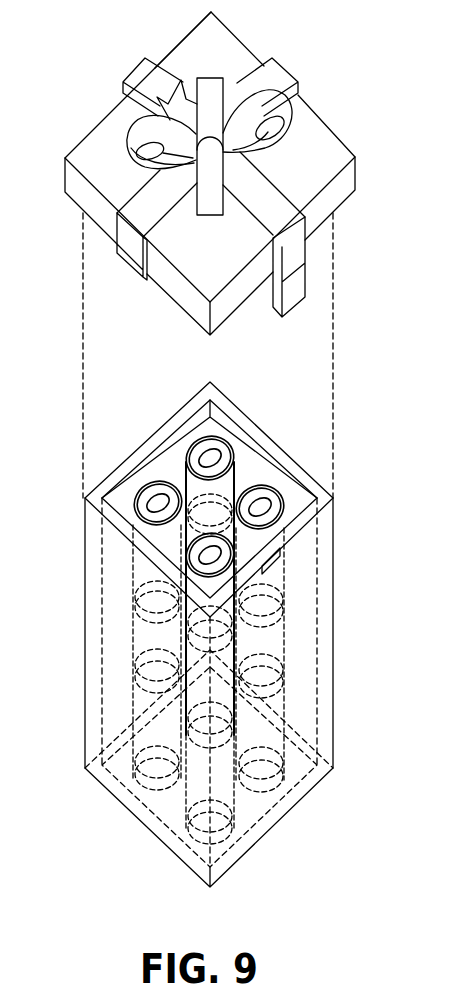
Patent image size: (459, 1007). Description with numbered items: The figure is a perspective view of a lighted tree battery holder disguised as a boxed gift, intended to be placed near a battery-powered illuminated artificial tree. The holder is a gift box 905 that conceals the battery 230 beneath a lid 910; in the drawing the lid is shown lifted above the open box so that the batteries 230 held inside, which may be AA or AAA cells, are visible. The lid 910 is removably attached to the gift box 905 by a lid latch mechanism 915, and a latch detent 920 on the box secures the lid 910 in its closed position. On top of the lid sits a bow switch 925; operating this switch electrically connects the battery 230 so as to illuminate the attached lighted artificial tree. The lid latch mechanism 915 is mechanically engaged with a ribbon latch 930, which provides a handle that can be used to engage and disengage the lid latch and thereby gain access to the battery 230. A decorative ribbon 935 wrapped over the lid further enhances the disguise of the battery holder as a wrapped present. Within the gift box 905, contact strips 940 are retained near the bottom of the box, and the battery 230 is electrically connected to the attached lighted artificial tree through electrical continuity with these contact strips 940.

The gift box 905 is at (323, 482).
The lid 910 is at (325, 128).
The lid latch mechanism 915 is at (305, 277).
The latch detent 920 is at (282, 557).
The bow switch 925 is at (276, 88).
The ribbon latch 930 is at (247, 163).
The decorative ribbon 935 is at (127, 235).
The contact strips 940 is at (133, 735).
The battery 230 is at (150, 484).